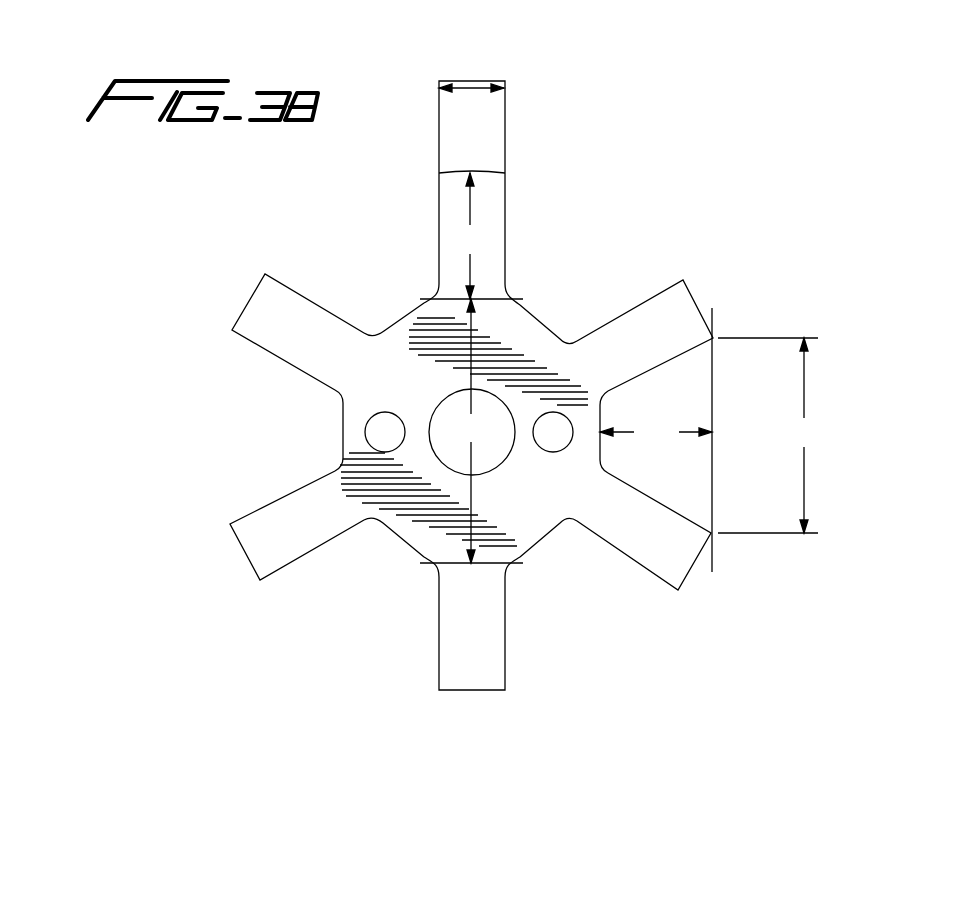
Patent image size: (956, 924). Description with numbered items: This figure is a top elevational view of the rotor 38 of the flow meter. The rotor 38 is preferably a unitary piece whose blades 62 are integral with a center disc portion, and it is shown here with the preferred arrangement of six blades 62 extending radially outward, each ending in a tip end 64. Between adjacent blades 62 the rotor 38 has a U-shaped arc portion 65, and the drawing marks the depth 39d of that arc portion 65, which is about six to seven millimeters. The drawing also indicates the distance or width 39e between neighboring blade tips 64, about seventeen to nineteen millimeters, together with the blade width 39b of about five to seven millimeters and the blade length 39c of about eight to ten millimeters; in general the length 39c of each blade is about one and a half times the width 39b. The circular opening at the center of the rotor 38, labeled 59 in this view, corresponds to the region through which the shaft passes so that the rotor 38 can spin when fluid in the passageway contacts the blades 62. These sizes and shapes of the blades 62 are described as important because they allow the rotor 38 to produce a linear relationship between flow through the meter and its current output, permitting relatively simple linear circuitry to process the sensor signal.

The rotor 38 is at (598, 218).
The blade width 39b is at (469, 86).
The blade length 39c is at (471, 236).
The arc portion depth 39d is at (656, 433).
The distance between blade tips 39e is at (767, 440).
The central bore 59 is at (471, 431).
The blades 62 is at (314, 330).
The tip ends 64 is at (245, 300).
The U-shaped arc portion 65 is at (341, 431).